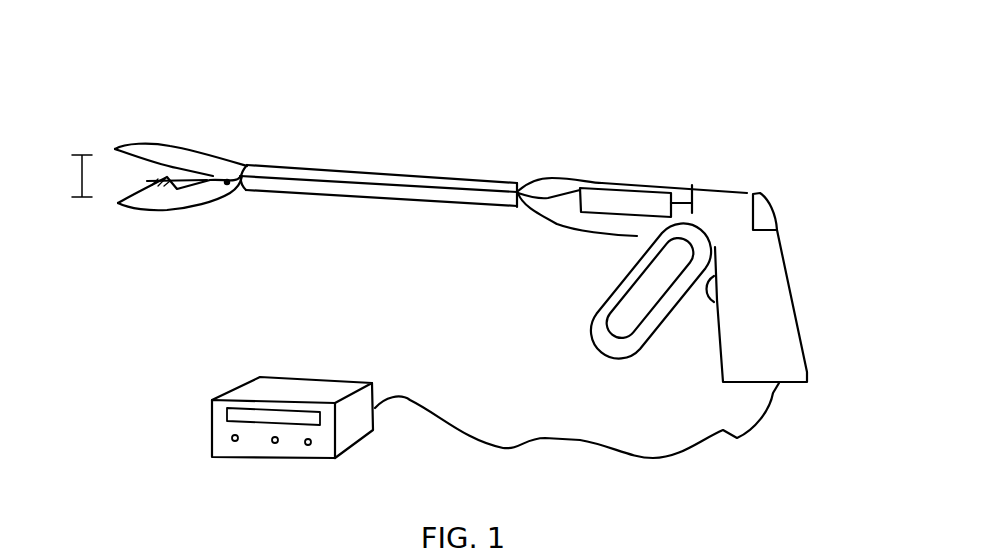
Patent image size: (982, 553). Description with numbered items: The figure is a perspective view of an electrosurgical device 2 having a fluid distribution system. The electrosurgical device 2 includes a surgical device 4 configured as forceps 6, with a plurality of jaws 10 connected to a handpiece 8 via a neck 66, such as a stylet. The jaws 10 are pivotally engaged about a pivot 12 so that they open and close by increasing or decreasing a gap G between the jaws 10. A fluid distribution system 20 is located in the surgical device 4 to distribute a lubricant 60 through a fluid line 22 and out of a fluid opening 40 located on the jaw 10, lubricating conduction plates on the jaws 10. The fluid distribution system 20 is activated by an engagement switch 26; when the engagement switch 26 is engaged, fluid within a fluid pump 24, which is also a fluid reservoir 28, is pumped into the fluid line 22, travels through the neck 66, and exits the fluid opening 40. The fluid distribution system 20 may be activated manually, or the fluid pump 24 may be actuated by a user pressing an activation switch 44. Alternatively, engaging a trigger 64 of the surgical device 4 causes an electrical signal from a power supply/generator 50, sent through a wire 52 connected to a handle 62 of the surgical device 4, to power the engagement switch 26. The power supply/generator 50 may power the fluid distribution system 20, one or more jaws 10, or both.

The electrosurgical device 2 is at (808, 107).
The surgical device 4 is at (717, 210).
The forceps 6 is at (115, 130).
The handpiece 8 is at (748, 92).
The jaws 10 is at (147, 147).
The pivot 12 is at (227, 187).
The fluid distribution system 20 is at (607, 172).
The fluid line 22 is at (363, 180).
The fluid pump 24 is at (638, 203).
The engagement switch 26 is at (691, 186).
The fluid reservoir 28 is at (638, 203).
The fluid opening 40 is at (177, 167).
The activation switch 44 is at (770, 203).
The power supply/generator 50 is at (300, 390).
The wire 52 is at (507, 450).
The lubricant 60 is at (150, 180).
The handle 62 is at (767, 308).
The trigger 64 is at (598, 327).
The neck 66 is at (453, 195).
The gap G is at (73, 176).